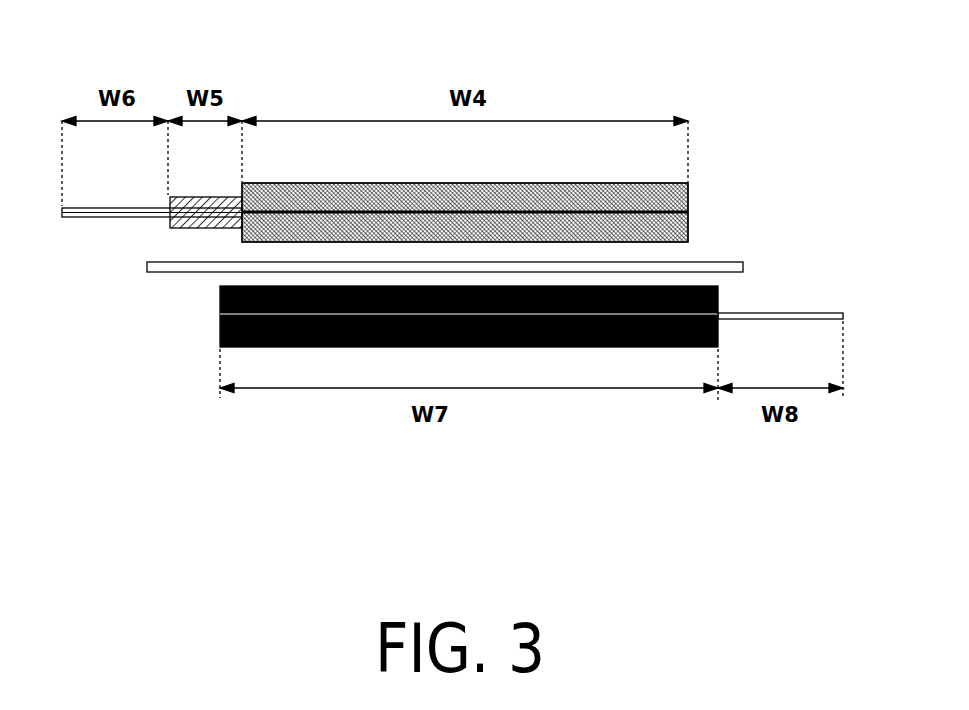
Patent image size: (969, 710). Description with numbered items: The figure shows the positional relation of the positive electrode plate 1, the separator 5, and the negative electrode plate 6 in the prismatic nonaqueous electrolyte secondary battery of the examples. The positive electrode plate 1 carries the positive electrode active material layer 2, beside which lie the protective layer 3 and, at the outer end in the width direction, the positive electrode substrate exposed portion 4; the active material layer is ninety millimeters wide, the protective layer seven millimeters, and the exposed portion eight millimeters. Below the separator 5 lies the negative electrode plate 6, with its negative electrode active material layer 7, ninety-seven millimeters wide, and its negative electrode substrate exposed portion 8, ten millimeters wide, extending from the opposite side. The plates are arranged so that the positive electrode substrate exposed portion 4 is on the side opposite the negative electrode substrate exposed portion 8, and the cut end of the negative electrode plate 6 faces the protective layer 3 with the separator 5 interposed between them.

The positive electrode plate 1 is at (707, 123).
The positive electrode active material layer 2 is at (688, 203).
The protective layer 3 is at (168, 225).
The positive electrode substrate exposed portion 4 is at (100, 212).
The separator 5 is at (743, 265).
The negative electrode plate 6 is at (194, 370).
The negative electrode active material layer 7 is at (220, 311).
The negative electrode substrate exposed portion 8 is at (827, 313).